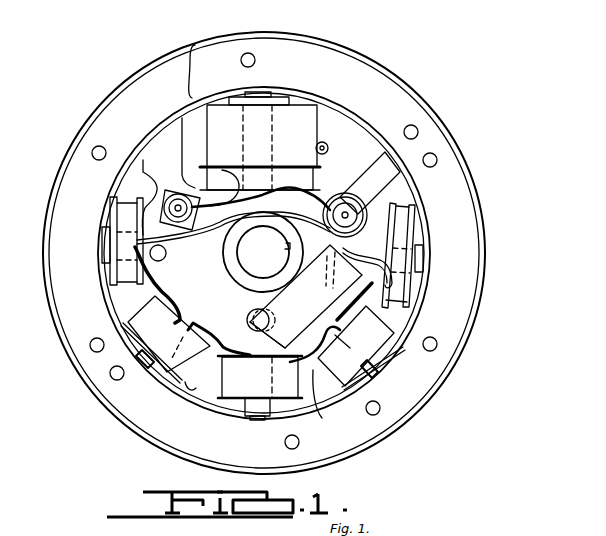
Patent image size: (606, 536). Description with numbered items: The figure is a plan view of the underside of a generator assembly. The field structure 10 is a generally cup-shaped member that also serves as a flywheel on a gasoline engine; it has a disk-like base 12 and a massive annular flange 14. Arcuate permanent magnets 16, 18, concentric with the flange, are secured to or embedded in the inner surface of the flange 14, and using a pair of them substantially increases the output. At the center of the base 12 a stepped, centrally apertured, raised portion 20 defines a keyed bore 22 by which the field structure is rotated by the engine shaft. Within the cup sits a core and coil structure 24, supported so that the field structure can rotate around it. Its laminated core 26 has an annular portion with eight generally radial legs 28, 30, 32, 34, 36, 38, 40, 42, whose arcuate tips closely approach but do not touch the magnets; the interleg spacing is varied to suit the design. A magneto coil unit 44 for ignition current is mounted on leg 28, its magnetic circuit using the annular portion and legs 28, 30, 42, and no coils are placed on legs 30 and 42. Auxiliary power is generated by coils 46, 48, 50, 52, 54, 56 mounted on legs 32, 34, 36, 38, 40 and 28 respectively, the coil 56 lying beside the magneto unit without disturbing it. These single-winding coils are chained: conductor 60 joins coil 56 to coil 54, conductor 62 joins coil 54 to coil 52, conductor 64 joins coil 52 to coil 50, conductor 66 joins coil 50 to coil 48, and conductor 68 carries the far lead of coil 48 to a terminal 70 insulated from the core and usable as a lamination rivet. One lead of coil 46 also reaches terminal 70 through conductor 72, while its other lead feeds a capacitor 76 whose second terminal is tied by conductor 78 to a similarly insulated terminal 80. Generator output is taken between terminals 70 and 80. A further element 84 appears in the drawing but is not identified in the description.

The field structure 10 is at (448, 157).
The base 12 is at (190, 380).
The annular flange 14 is at (70, 328).
The permanent magnet 16 is at (195, 48).
The permanent magnet 18 is at (395, 362).
The raised portion 20 is at (236, 249).
The keyed bore 22 is at (185, 312).
The core and coil structure 24 is at (125, 296).
The core 26 is at (169, 334).
The leg 28 is at (268, 90).
The leg 30 is at (403, 172).
The leg 32 is at (412, 237).
The leg 34 is at (383, 380).
The leg 36 is at (253, 416).
The leg 38 is at (155, 370).
The leg 40 is at (110, 237).
The leg 42 is at (140, 162).
The magneto coil unit 44 is at (260, 147).
The coil 46 is at (400, 213).
The coil 48 is at (356, 346).
The coil 50 is at (260, 377).
The coil 52 is at (172, 380).
The coil 54 is at (115, 262).
The coil 56 is at (217, 172).
The conductor 60 is at (182, 266).
The conductor 62 is at (150, 279).
The conductor 64 is at (253, 318).
The conductor 66 is at (317, 377).
The conductor 68 is at (364, 284).
The terminal 70 is at (370, 183).
The conductor 72 is at (345, 220).
The capacitor 76 is at (306, 296).
The conductor 78 is at (300, 193).
The terminal 80 is at (233, 197).
The screw 84 is at (328, 151).